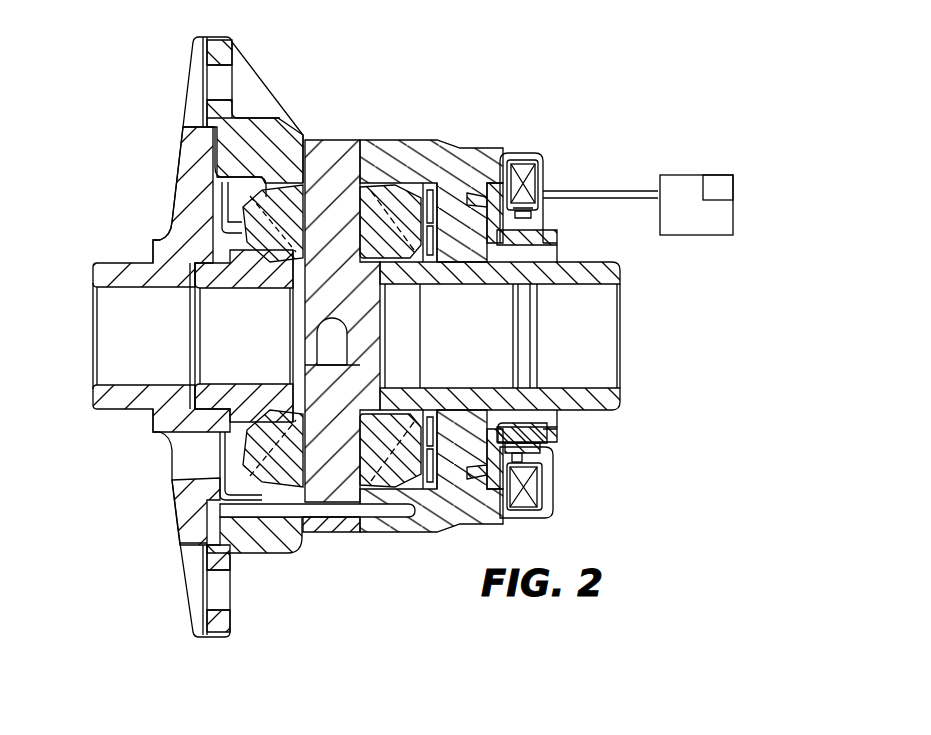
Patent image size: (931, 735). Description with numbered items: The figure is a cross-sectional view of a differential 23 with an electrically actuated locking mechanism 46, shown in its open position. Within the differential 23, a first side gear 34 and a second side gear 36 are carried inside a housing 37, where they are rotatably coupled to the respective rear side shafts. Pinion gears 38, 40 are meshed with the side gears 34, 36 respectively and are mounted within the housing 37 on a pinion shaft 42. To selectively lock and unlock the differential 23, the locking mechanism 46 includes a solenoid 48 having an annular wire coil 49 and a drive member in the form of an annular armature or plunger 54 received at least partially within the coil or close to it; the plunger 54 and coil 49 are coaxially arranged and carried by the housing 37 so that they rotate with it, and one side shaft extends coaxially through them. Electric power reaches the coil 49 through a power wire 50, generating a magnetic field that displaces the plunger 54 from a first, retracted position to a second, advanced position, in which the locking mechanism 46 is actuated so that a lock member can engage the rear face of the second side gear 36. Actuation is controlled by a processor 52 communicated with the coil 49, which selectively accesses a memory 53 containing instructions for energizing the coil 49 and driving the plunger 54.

The differential 23 is at (441, 337).
The first side gear 34 is at (254, 278).
The second side gear 36 is at (443, 268).
The housing 37 is at (276, 128).
The pinion gear 38 is at (380, 197).
The pinion gear 40 is at (377, 467).
The pinion shaft 42 is at (343, 157).
The locking mechanism 46 is at (487, 183).
The solenoid 48 is at (553, 290).
The wire coil 49 is at (527, 180).
The power wire 50 is at (608, 207).
The processor 52 is at (721, 185).
The memory 53 is at (720, 188).
The plunger 54 is at (537, 243).